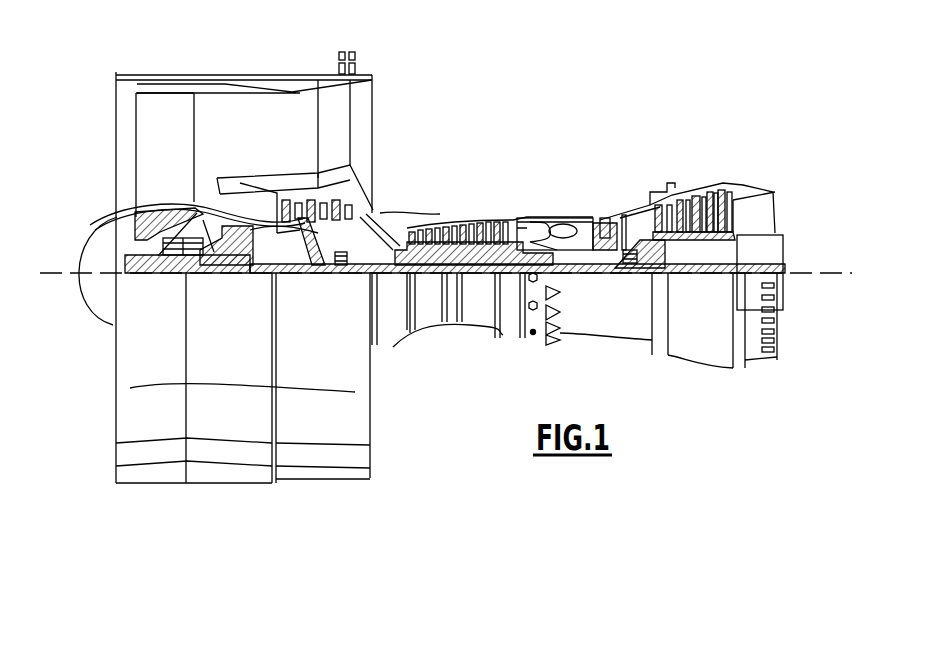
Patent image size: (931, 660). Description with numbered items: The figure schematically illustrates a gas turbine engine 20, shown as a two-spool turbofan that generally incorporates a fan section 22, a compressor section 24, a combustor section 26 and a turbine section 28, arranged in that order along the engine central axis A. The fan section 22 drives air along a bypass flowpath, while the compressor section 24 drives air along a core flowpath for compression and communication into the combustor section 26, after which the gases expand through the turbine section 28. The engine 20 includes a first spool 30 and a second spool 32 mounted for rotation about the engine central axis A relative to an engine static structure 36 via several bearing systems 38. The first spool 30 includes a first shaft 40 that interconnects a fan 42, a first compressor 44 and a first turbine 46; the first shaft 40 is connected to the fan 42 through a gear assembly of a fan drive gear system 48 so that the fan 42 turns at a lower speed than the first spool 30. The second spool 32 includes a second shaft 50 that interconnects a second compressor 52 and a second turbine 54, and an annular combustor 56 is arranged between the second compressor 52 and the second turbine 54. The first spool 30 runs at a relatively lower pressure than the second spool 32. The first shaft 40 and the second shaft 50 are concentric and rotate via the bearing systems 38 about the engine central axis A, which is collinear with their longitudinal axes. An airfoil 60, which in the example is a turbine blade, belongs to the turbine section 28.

The gas turbine engine 20 is at (565, 108).
The fan section 22 is at (194, 68).
The compressor section 24 is at (405, 203).
The combustor section 26 is at (562, 200).
The turbine section 28 is at (668, 177).
The first spool 30 is at (480, 280).
The second spool 32 is at (512, 225).
The engine static structure 36 is at (508, 337).
The bearing systems 38 is at (342, 273).
The first shaft 40 is at (385, 275).
The fan 42 is at (183, 165).
The first compressor 44 is at (372, 172).
The first turbine 46 is at (697, 195).
The fan drive gear system 48 is at (246, 273).
The second shaft 50 is at (573, 274).
The second compressor 52 is at (460, 221).
The second turbine 54 is at (607, 222).
The annular combustor 56 is at (553, 200).
The airfoil 60 is at (735, 190).
The engine central axis A is at (846, 273).